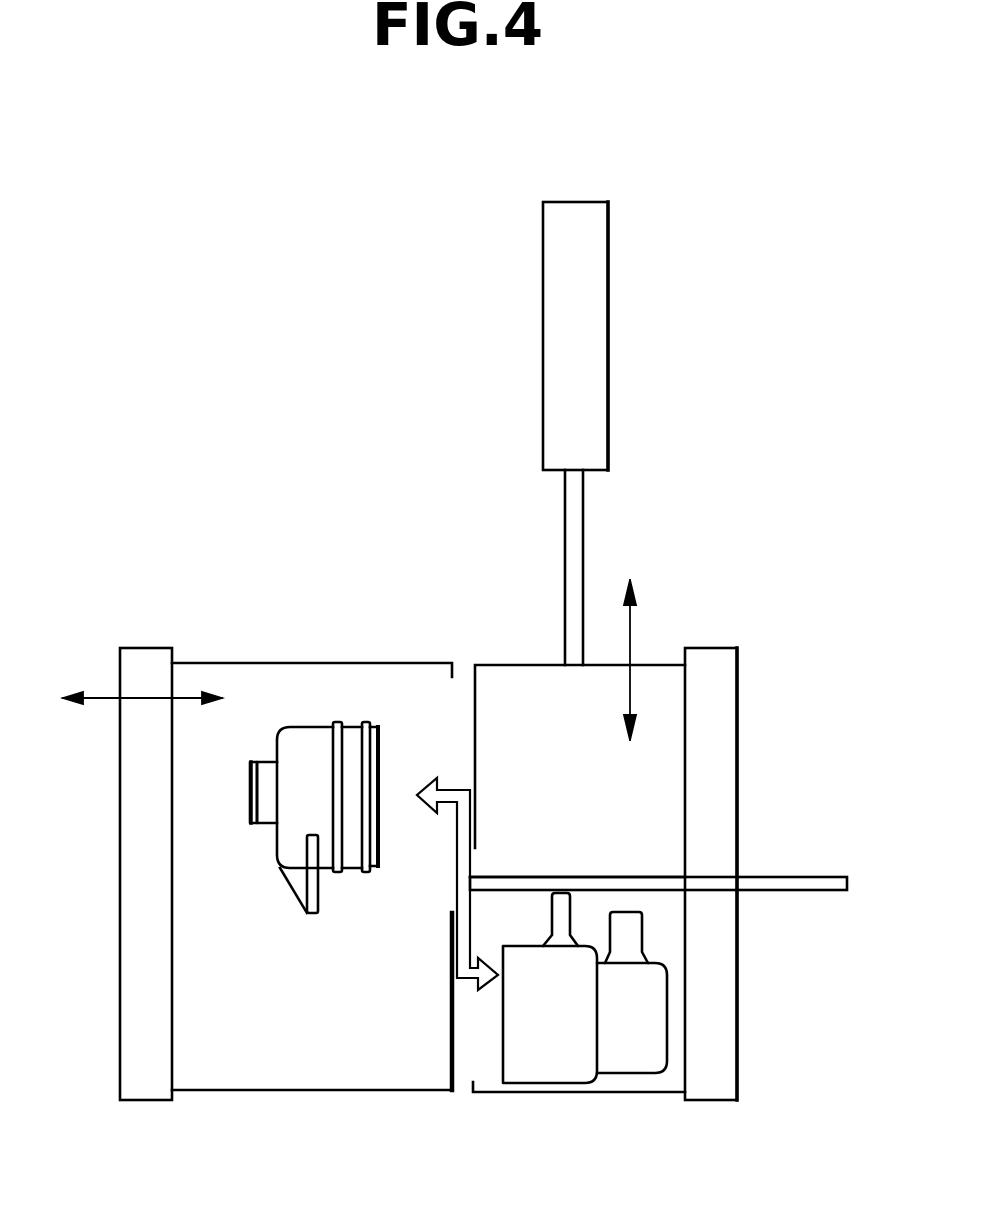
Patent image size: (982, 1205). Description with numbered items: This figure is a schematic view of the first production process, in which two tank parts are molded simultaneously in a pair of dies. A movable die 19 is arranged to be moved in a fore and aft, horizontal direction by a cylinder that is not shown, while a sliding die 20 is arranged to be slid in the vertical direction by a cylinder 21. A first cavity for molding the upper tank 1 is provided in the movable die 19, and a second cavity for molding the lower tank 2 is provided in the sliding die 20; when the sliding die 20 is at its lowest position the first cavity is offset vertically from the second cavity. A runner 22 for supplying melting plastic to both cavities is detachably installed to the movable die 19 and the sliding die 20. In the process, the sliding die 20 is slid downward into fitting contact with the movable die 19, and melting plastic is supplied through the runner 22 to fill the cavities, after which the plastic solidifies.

The upper tank 1 is at (293, 832).
The lower tank 2 is at (562, 1060).
The movable die 19 is at (240, 663).
The sliding die 20 is at (647, 770).
The cylinder 21 is at (588, 350).
The runner 22 is at (652, 877).